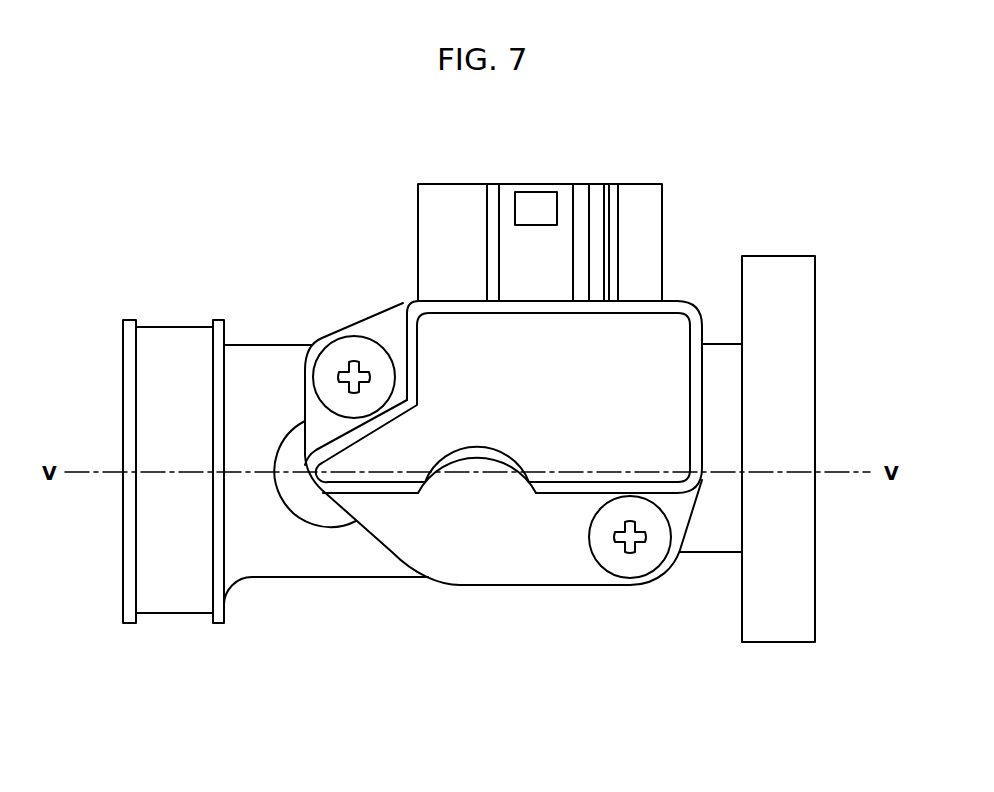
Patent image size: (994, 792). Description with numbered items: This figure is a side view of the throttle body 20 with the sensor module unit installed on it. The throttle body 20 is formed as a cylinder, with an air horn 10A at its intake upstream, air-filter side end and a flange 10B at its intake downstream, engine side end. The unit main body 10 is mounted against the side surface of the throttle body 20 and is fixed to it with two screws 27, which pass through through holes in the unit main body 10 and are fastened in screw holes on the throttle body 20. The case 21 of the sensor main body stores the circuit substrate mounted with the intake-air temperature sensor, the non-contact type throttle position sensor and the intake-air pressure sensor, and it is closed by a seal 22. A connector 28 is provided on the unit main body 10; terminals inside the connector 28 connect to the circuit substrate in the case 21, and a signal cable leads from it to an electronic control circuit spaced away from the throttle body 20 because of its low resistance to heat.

The unit main body 10 is at (317, 578).
The air horn 10A is at (123, 513).
The flange 10B is at (815, 520).
The throttle body 20 is at (550, 590).
The case 21 is at (467, 530).
The seal 22 is at (668, 343).
The screws 27 is at (345, 358).
The connector 28 is at (662, 218).